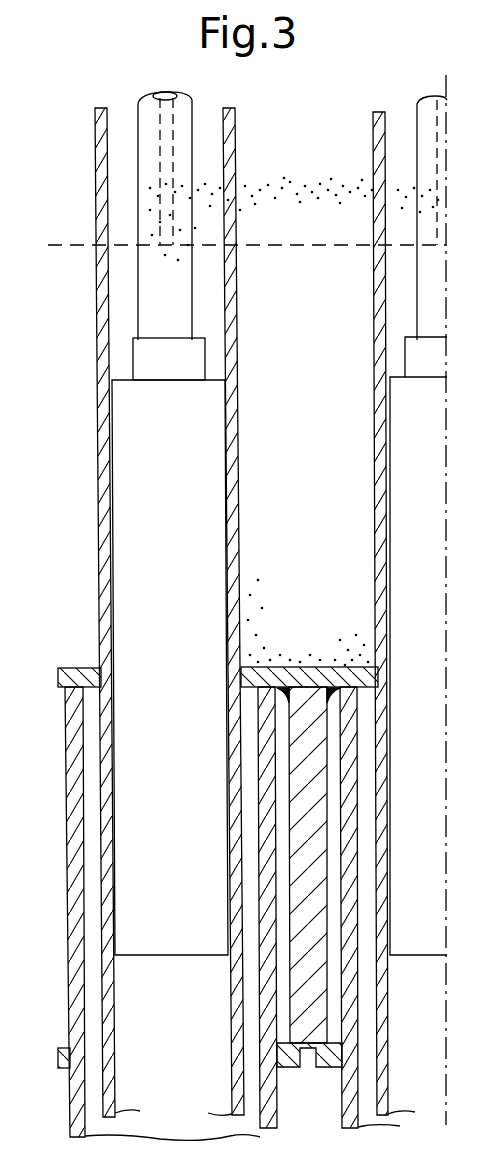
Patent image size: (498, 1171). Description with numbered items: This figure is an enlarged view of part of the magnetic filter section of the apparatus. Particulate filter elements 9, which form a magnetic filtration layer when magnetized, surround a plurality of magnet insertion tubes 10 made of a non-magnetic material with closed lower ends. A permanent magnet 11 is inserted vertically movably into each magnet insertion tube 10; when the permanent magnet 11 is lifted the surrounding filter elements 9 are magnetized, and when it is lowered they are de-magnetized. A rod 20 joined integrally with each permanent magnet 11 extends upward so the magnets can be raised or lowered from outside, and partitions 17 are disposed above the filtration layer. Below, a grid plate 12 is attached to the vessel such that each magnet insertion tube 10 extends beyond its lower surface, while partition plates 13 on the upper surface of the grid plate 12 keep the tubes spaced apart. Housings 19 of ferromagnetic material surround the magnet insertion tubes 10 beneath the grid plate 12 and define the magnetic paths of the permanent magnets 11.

The filter elements 9 is at (262, 192).
The magnet insertion tube 10 is at (318, 148).
The permanent magnet 11 is at (131, 573).
The grid plate 12 is at (316, 810).
The partition plate 13 is at (86, 675).
The partitions 17 is at (158, 160).
The housing 19 is at (76, 1011).
The rod 20 is at (140, 124).